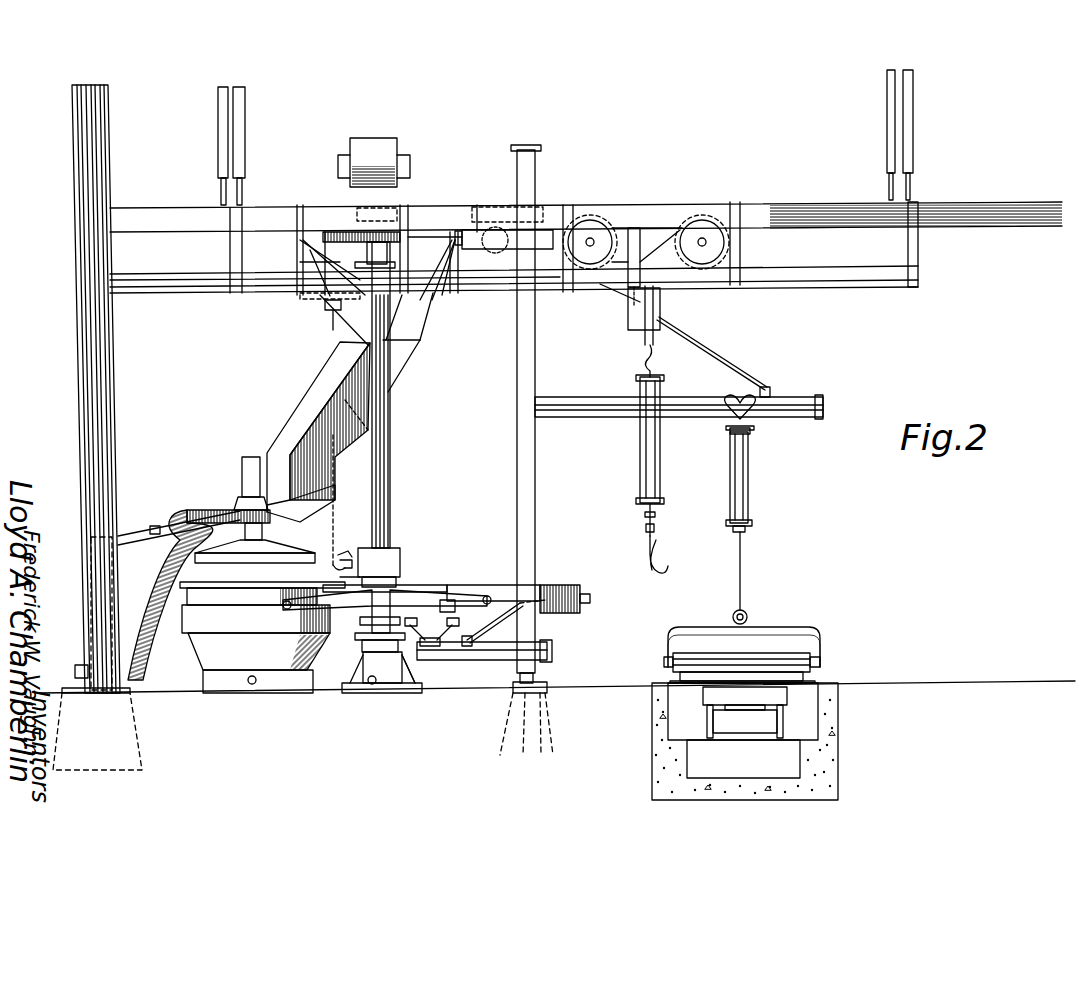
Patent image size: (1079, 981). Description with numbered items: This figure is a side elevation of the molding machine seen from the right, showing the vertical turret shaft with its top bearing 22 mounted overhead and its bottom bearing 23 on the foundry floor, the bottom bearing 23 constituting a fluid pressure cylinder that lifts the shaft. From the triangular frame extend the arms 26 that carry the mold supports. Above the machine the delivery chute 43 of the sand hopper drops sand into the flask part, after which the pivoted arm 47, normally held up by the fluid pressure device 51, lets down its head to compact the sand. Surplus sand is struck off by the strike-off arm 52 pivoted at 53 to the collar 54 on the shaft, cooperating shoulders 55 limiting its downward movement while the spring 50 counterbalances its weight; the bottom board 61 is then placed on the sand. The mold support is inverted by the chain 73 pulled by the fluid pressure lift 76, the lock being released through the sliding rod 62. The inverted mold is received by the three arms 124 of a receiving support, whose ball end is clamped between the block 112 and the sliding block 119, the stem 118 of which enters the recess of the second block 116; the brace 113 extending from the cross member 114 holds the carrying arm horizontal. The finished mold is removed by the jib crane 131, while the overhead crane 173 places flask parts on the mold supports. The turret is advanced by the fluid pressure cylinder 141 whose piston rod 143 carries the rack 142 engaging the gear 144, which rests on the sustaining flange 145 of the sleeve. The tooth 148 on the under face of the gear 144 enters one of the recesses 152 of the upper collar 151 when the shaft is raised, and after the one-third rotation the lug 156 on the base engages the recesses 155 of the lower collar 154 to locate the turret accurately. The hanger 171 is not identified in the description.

The block 112 is at (372, 150).
The hanger 171 is at (396, 236).
The bearing 22 is at (380, 216).
The gear 144 is at (440, 236).
The fluid pressure cylinder 141 is at (522, 240).
The overhead crane 173 is at (638, 250).
The rack 142 is at (325, 233).
The sustaining flange 145 is at (353, 245).
The tooth 148 is at (355, 260).
The collar 151 is at (300, 288).
The recesses 152 is at (333, 300).
The fluid pressure lift 76 is at (330, 343).
The piston rod 143 is at (460, 250).
The delivery chute 43 is at (400, 358).
The fluid pressure device 51 is at (245, 478).
The arm 47 is at (150, 568).
The stem 118 is at (78, 660).
The second block 116 is at (243, 622).
The sliding block 119 is at (276, 548).
The spring 50 is at (360, 579).
The cross member 114 is at (317, 500).
The chain 73 is at (336, 503).
The strike-off arm 52 is at (336, 530).
The pivot 53 is at (339, 560).
The collar 54 is at (389, 563).
The arms 26 is at (410, 597).
The arms 124 is at (425, 627).
The bottom board 61 is at (558, 592).
The brace 113 is at (487, 630).
The shoulders 55 is at (352, 590).
The rod 62 is at (421, 614).
The lug 156 is at (366, 628).
The collar 154 is at (362, 647).
The bearing 23 is at (382, 687).
The recesses 155 is at (407, 657).
The jib crane 131 is at (740, 469).